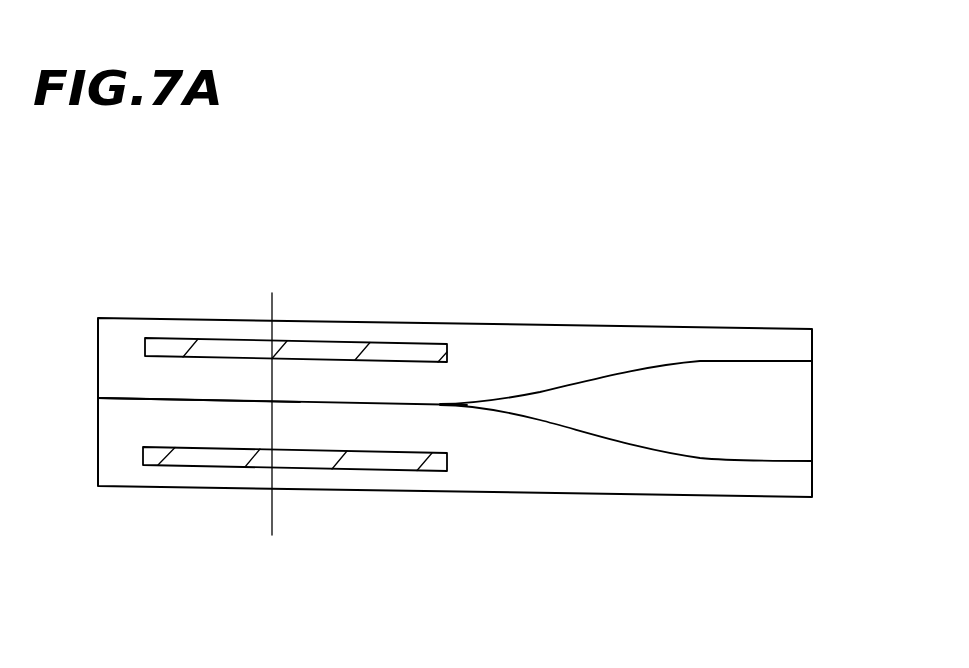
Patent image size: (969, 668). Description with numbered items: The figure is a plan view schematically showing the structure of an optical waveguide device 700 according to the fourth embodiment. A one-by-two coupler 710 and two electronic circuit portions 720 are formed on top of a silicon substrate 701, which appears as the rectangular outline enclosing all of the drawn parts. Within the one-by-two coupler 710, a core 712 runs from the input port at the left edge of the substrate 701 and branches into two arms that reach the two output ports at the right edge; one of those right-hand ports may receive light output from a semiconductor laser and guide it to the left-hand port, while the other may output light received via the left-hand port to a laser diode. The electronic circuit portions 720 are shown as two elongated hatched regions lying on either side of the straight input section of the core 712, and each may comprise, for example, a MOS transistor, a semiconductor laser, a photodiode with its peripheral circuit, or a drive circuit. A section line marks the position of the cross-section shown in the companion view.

The optical waveguide device 700 is at (858, 171).
The silicon substrate 701 is at (592, 498).
The 1×2 coupler 710 is at (552, 383).
The core 712 is at (126, 400).
The electronic circuit portion 720 is at (414, 342).